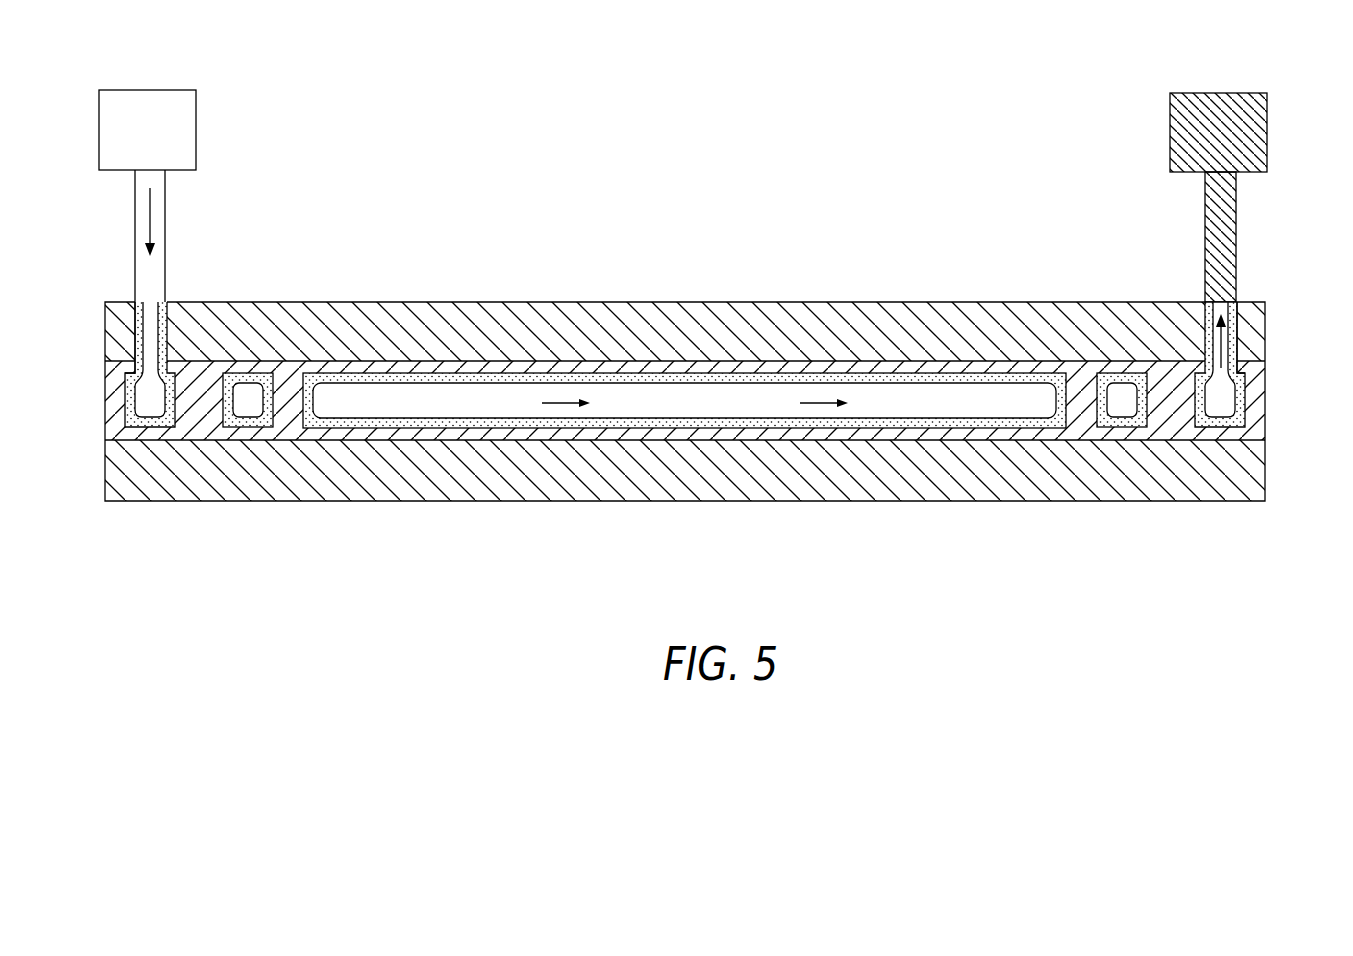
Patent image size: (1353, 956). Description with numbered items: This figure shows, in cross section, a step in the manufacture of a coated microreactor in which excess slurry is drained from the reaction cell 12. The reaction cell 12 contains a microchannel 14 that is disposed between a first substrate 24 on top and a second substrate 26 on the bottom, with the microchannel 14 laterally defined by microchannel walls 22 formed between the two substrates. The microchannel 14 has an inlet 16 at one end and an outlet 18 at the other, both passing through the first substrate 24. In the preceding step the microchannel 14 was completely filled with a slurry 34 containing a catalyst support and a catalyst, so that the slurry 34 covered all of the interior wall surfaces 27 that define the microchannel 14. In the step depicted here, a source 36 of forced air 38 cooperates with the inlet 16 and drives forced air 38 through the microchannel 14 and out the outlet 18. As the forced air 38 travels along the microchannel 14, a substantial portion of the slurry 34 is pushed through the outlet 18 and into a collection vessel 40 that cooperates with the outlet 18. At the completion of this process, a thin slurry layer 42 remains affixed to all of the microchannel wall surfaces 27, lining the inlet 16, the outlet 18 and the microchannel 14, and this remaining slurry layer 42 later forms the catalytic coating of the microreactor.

The reaction cell 12 is at (353, 302).
The microchannel 14 is at (152, 418).
The inlet 16 is at (150, 305).
The outlet 18 is at (1222, 310).
The microchannel walls 22 is at (440, 362).
The first substrate 24 is at (903, 320).
The second substrate 26 is at (925, 478).
The interior surfaces 27 is at (724, 386).
The slurry 34 is at (1237, 205).
The source of forced air 36 is at (190, 129).
The forced air 38 is at (150, 203).
The collection vessel 40 is at (1260, 132).
The slurry layer 42 is at (248, 378).